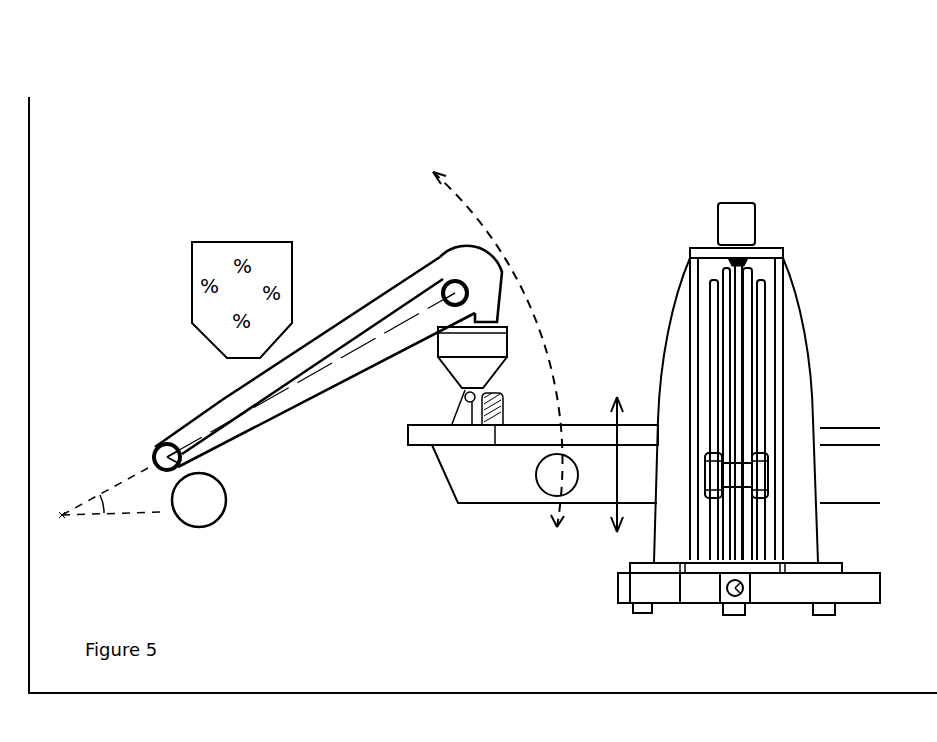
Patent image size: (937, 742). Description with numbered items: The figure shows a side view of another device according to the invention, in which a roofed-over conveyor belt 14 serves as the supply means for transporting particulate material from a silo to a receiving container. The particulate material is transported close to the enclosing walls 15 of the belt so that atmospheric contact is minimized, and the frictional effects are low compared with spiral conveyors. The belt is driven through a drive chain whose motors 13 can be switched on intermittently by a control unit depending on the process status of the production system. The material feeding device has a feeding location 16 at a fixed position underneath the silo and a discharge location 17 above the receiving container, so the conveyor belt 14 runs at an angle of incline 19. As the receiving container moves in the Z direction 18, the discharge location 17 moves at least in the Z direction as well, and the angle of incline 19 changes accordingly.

The motor 13 is at (223, 510).
The conveyor belt 14 is at (217, 403).
The enclosing walls 15 is at (437, 260).
The feeding location 16 is at (252, 397).
The discharge location 17 is at (478, 280).
The Z direction 18 is at (570, 12).
The angle of incline 19 is at (96, 499).